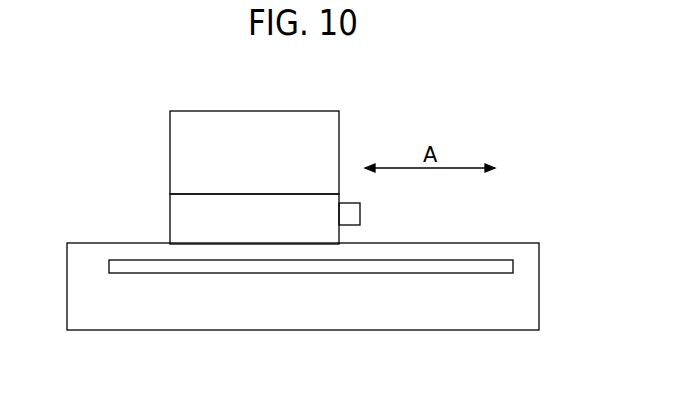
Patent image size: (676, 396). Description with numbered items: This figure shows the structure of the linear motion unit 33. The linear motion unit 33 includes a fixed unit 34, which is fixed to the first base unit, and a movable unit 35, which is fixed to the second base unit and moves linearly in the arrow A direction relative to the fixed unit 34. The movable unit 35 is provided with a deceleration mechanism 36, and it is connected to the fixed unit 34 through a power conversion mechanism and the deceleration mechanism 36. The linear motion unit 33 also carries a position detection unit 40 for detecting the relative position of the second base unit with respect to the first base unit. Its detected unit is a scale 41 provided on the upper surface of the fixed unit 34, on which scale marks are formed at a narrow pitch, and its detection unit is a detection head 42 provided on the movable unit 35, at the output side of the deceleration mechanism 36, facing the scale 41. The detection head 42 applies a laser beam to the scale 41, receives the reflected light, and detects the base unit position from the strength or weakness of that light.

The linear motion unit 33 is at (235, 160).
The fixed unit 34 is at (540, 302).
The movable unit 35 is at (339, 137).
The deceleration mechanism 36 is at (170, 215).
The position detection unit 40 is at (336, 283).
The scale 41 is at (440, 273).
The detection head 42 is at (360, 213).